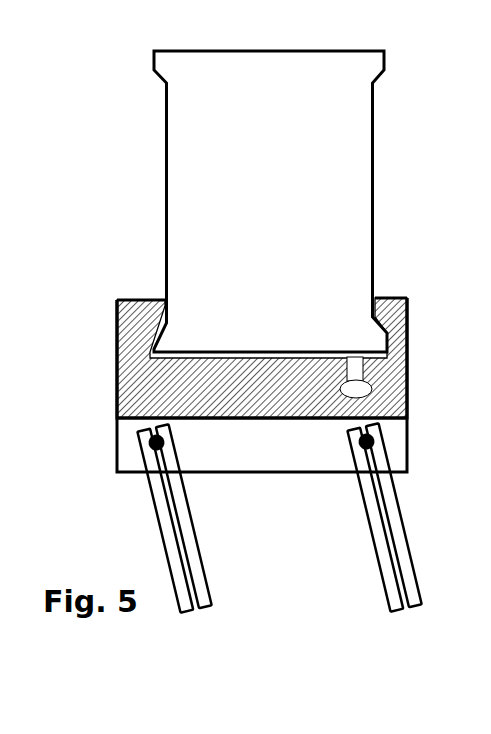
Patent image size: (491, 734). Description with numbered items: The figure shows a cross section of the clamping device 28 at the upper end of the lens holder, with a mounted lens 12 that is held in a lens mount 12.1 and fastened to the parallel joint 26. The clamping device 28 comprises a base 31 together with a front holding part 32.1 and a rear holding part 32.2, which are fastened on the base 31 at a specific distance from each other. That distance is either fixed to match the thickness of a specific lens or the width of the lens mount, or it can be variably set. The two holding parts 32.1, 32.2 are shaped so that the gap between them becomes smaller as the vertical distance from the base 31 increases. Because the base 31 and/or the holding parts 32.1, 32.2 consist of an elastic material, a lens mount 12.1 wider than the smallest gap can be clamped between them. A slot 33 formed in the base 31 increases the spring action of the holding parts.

The lens 12 is at (148, 185).
The lens mount 12.1 is at (165, 252).
The parallel joint 26 is at (113, 537).
The clamping device 28 is at (85, 347).
The base 31 is at (117, 395).
The front holding part 32.1 is at (117, 302).
The rear holding part 32.2 is at (405, 322).
The slot 33 is at (405, 377).